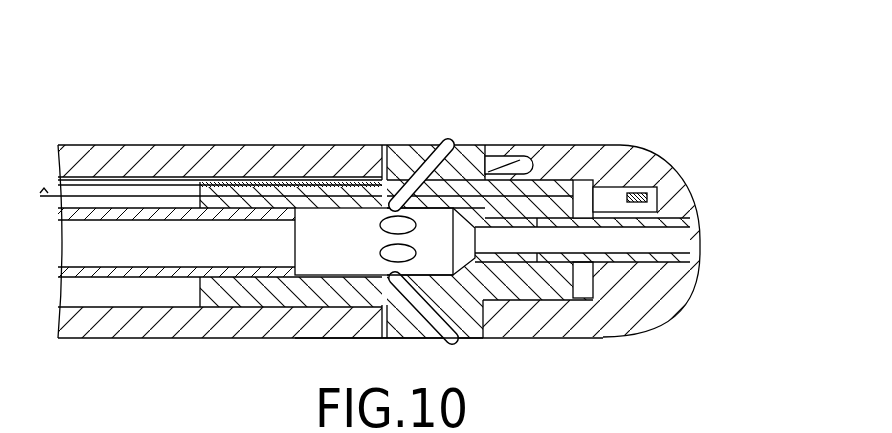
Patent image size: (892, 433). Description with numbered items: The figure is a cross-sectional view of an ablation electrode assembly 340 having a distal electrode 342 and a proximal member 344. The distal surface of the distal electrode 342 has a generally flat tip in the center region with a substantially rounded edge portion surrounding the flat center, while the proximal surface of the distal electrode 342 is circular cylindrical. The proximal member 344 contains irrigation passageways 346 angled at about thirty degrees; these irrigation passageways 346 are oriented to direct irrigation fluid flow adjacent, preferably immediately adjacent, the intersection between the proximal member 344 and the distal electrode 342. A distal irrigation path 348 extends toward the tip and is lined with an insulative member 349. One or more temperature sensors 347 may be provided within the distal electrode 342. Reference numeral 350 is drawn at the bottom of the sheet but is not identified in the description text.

The ablation electrode assembly 340 is at (578, 118).
The distal electrode 342 is at (650, 156).
The proximal member 344 is at (408, 158).
The irrigation passageways 346 is at (455, 152).
The temperature sensors 347 is at (688, 190).
The distal irrigation path 348 is at (685, 238).
The insulative member 349 is at (703, 260).
The guidewire 350 is at (618, 432).